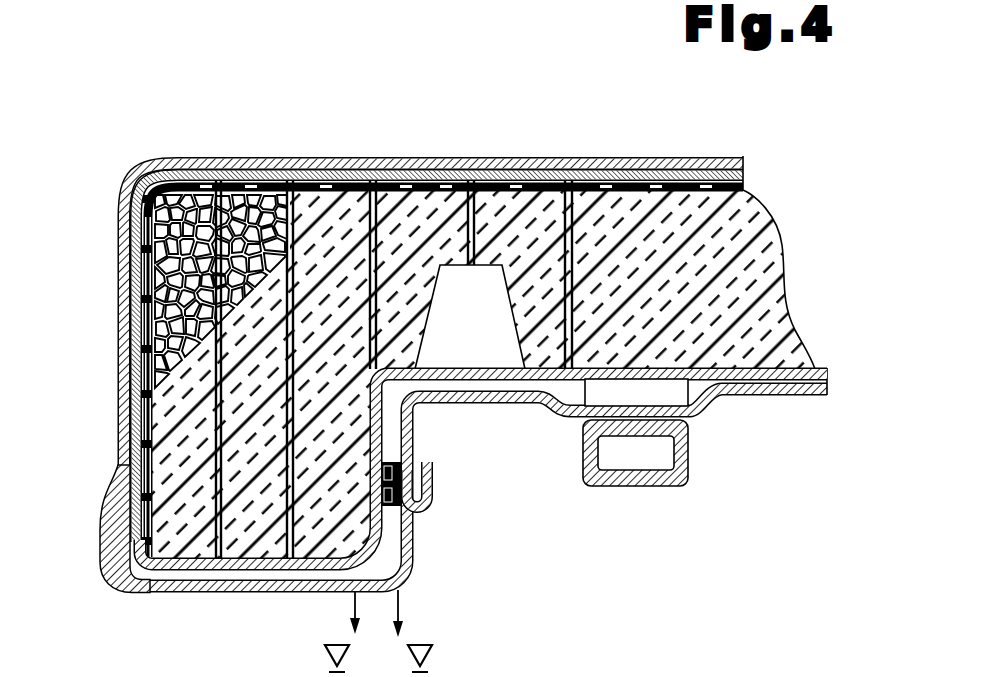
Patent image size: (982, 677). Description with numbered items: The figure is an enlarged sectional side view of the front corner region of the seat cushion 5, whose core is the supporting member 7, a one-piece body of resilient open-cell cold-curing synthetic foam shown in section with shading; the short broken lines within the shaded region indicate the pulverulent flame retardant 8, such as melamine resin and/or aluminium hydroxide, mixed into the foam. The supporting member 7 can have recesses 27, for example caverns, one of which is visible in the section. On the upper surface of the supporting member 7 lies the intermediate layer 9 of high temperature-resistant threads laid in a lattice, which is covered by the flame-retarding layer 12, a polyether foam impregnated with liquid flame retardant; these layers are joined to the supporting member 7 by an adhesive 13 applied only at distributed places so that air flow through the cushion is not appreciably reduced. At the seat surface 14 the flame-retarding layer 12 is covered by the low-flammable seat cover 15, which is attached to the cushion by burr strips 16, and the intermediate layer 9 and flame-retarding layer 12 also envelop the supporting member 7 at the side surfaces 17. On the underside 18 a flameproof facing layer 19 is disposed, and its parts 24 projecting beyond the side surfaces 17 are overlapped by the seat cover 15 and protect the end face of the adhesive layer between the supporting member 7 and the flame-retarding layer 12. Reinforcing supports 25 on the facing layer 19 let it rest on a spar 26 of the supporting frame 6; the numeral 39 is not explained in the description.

The seat cushion 5 is at (131, 165).
The supporting frame 6 is at (625, 505).
The supporting member 7 is at (758, 244).
The flame retardant 8 is at (740, 200).
The intermediate layer 9 is at (125, 278).
The flame-retarding layer 12 is at (301, 182).
The adhesive 13 is at (140, 590).
The seat surface 14 is at (424, 157).
The seat cover 15 is at (118, 332).
The burr strips 16 is at (412, 518).
The side surfaces 17 is at (110, 420).
The underside 18 is at (553, 478).
The facing layer 19 is at (312, 572).
The parts of the facing layer 24 is at (105, 573).
The reinforcing supports 25 is at (692, 412).
The spar 26 is at (688, 478).
The recesses 27 is at (490, 345).
The support 39 is at (647, 676).